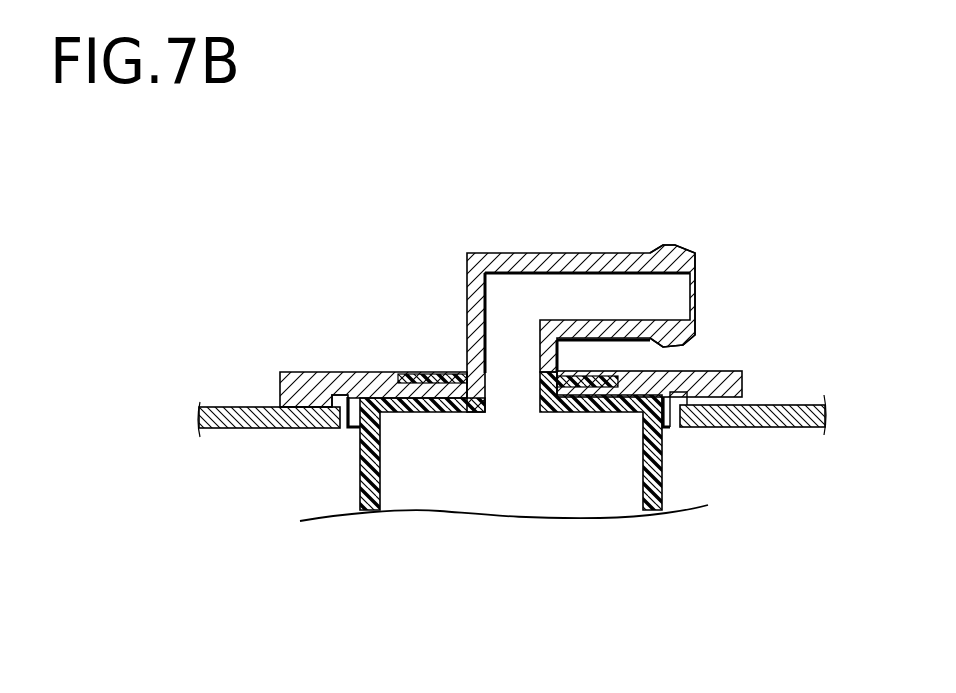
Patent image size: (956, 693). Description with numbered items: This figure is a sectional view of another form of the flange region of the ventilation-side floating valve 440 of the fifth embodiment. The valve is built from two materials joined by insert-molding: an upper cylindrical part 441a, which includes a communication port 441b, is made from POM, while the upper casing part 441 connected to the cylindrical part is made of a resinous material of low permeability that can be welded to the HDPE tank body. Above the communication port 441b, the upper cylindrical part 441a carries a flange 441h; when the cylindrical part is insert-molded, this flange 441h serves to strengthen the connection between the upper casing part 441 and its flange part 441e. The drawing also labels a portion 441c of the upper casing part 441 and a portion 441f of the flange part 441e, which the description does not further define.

The ventilation-side floating valve 440 is at (208, 473).
The upper casing part 441 is at (605, 240).
The upper cylindrical part 441a is at (662, 472).
The communication port 441b is at (510, 412).
The end wall portion 441c is at (695, 294).
The flange part 441e is at (338, 380).
The contact portion 441f is at (280, 405).
The flange 441h is at (413, 413).